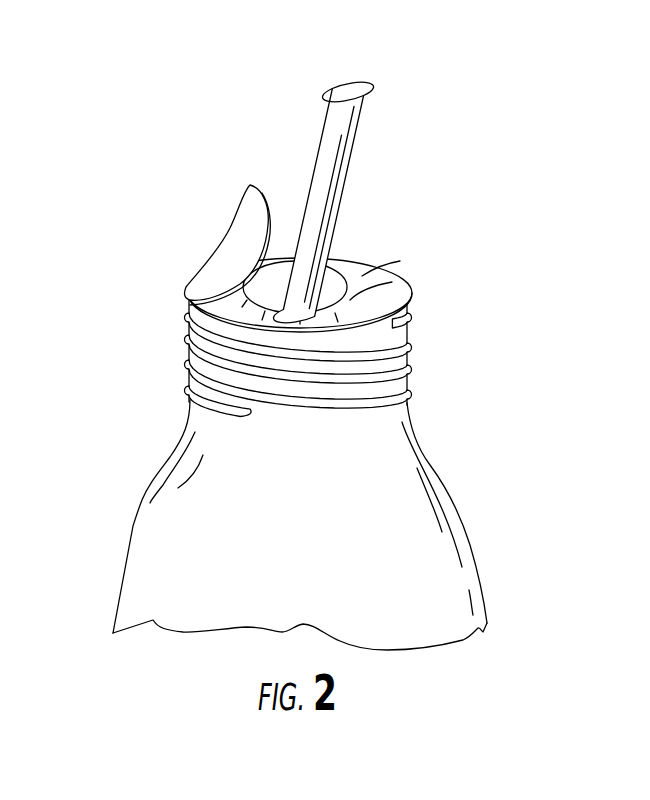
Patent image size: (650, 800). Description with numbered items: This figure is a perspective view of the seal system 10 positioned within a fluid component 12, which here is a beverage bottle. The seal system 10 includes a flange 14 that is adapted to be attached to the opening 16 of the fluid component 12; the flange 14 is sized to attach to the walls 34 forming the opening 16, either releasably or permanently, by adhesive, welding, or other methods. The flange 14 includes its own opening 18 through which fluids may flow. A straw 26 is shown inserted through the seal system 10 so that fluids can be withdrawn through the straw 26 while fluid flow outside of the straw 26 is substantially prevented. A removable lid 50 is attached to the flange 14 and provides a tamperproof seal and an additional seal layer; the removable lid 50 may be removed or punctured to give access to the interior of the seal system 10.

The seal system 10 is at (313, 343).
The fluid component 12 is at (437, 460).
The flange 14 is at (198, 180).
The opening 16 is at (313, 325).
The opening 18 is at (372, 258).
The straw 26 is at (362, 116).
The walls 34 is at (187, 333).
The removable lid 50 is at (252, 180).